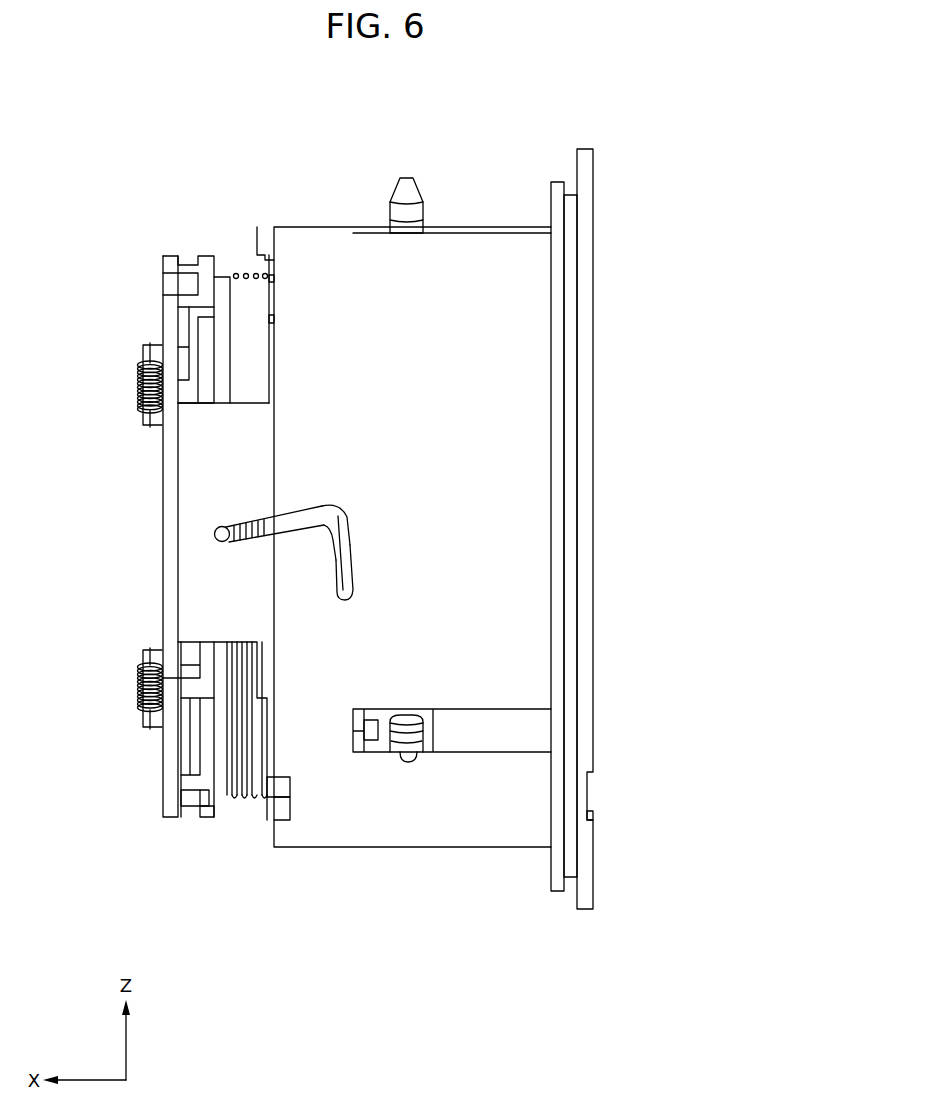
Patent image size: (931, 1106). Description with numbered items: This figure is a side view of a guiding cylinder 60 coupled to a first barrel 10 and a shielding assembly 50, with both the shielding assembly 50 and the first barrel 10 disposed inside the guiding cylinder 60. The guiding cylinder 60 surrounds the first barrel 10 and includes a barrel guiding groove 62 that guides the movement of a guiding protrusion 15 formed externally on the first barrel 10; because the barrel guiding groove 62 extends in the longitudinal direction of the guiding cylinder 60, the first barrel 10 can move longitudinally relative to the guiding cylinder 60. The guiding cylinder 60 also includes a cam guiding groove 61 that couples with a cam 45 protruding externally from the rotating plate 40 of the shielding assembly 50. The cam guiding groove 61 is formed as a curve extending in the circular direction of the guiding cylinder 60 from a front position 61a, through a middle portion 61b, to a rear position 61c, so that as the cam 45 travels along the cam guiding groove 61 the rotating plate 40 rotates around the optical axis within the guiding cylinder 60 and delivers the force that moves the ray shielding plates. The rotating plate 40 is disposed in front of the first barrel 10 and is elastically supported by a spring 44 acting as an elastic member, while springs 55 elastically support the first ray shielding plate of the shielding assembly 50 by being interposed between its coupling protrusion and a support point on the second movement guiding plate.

The first barrel 10 is at (496, 730).
The guiding protrusion 15 is at (400, 757).
The rotating plate 40 is at (225, 285).
The spring 44 is at (243, 800).
The cam 45 is at (216, 533).
The shielding assembly 50 is at (198, 835).
The springs 55 is at (138, 382).
The guiding cylinder 60 is at (414, 858).
The cam guiding groove 61 is at (323, 524).
The front position 61a is at (232, 525).
The middle portion 61b is at (337, 510).
The rear position 61c is at (354, 593).
The barrel guiding groove 62 is at (462, 709).